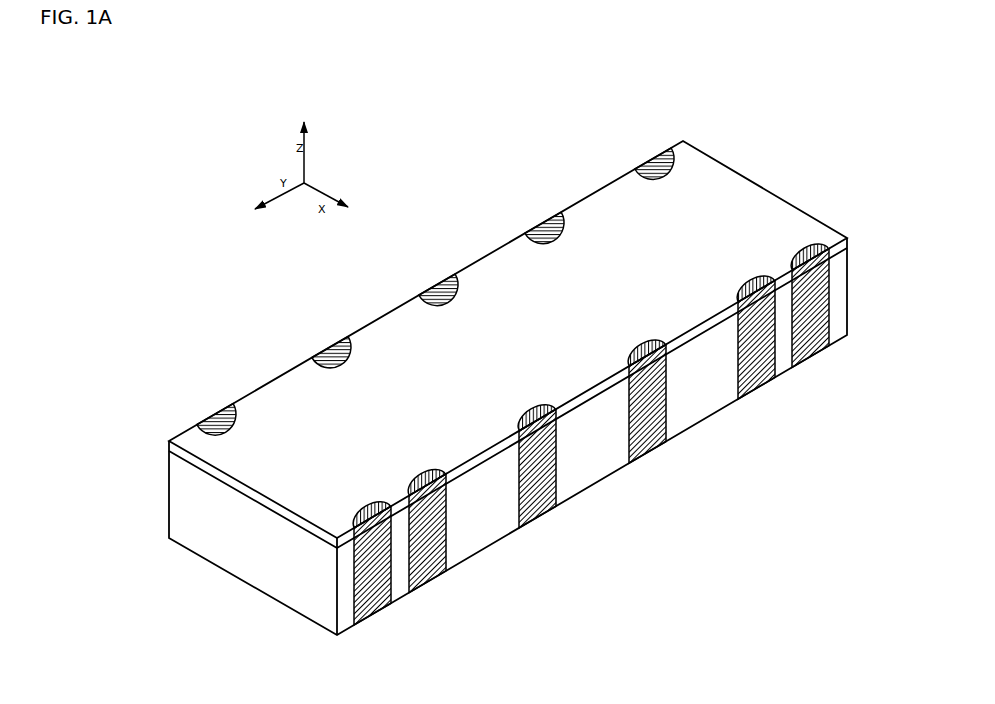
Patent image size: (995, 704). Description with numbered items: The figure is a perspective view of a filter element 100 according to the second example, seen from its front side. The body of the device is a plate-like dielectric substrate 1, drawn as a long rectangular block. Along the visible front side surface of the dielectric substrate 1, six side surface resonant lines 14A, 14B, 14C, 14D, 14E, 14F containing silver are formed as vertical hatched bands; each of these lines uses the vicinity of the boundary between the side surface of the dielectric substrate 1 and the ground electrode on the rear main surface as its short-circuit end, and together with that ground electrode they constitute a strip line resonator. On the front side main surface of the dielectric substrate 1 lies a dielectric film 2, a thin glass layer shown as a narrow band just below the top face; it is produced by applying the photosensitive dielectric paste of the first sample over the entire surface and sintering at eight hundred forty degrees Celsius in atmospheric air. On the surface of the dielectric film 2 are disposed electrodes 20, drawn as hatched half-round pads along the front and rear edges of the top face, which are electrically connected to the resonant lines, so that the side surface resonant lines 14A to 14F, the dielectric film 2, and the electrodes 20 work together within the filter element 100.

The filter element 100 is at (482, 217).
The dielectric substrate 1 is at (185, 488).
The dielectric film 2 is at (178, 451).
The electrode 20 is at (330, 350).
The side resonant line 14A is at (375, 600).
The side resonant line 14B is at (432, 565).
The side resonant line 14C is at (535, 503).
The side resonant line 14D is at (645, 438).
The side resonant line 14E is at (755, 375).
The side resonant line 14F is at (827, 343).